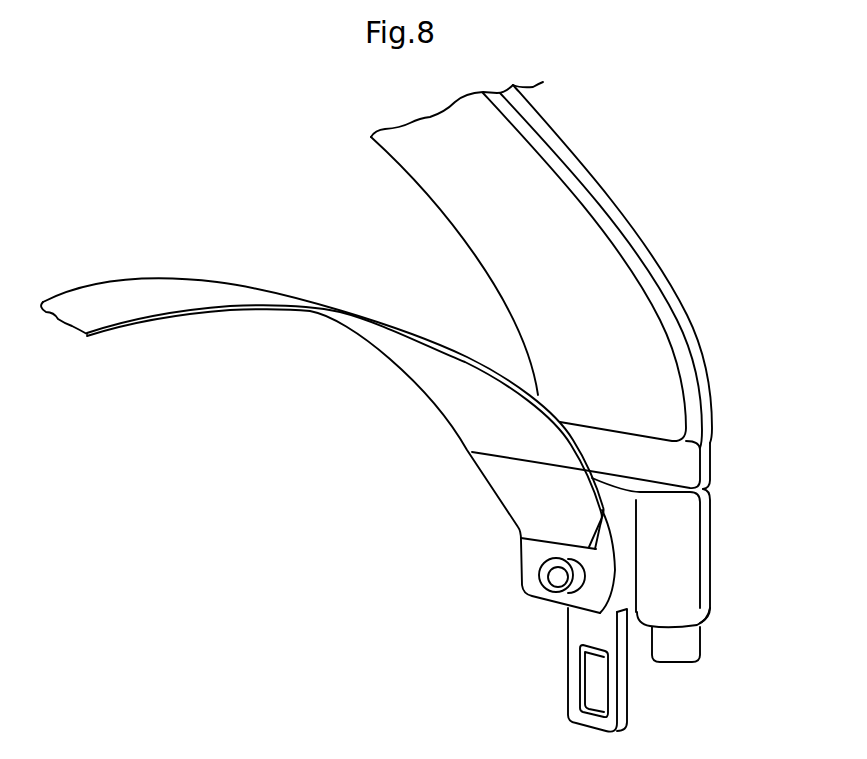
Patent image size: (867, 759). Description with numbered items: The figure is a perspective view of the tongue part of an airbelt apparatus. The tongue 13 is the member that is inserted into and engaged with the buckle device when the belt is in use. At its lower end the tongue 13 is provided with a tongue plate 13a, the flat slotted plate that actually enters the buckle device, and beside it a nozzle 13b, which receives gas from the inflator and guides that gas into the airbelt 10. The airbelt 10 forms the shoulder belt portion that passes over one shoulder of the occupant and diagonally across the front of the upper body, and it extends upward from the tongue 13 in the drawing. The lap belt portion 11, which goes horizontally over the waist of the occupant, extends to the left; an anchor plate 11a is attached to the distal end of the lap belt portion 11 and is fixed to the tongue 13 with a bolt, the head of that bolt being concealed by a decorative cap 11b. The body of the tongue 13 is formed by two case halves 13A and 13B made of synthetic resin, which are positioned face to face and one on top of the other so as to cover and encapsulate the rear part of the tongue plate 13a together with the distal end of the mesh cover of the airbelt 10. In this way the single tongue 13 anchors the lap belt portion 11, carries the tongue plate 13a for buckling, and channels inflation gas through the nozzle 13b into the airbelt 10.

The airbelt 10 is at (608, 163).
The lap belt portion 11 is at (375, 424).
The anchor plate 11a is at (537, 573).
The decorative cap 11b is at (556, 580).
The tongue 13 is at (642, 598).
The case half 13A is at (731, 556).
The case half 13B is at (662, 590).
The tongue plate 13a is at (567, 695).
The nozzle 13b is at (678, 655).